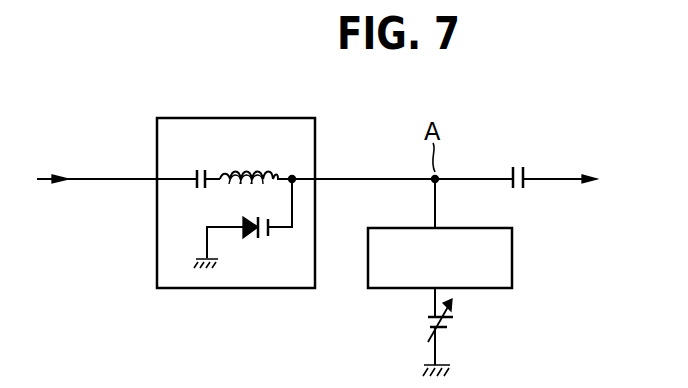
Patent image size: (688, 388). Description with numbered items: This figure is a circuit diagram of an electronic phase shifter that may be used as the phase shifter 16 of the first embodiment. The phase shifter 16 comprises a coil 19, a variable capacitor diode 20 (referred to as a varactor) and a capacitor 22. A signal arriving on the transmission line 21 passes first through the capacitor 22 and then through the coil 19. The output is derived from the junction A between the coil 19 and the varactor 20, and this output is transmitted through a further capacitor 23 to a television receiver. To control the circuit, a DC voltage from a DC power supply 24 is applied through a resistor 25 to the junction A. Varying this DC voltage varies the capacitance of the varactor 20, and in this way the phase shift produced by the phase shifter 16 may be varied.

The phase shifter 16 is at (230, 117).
The coil 19 is at (250, 170).
The variable capacitor diode 20 is at (249, 238).
The transmission line 21 is at (108, 177).
The capacitor 22 is at (201, 169).
The capacitor 23 is at (520, 165).
The DC power supply 24 is at (428, 325).
The resistor 25 is at (513, 254).